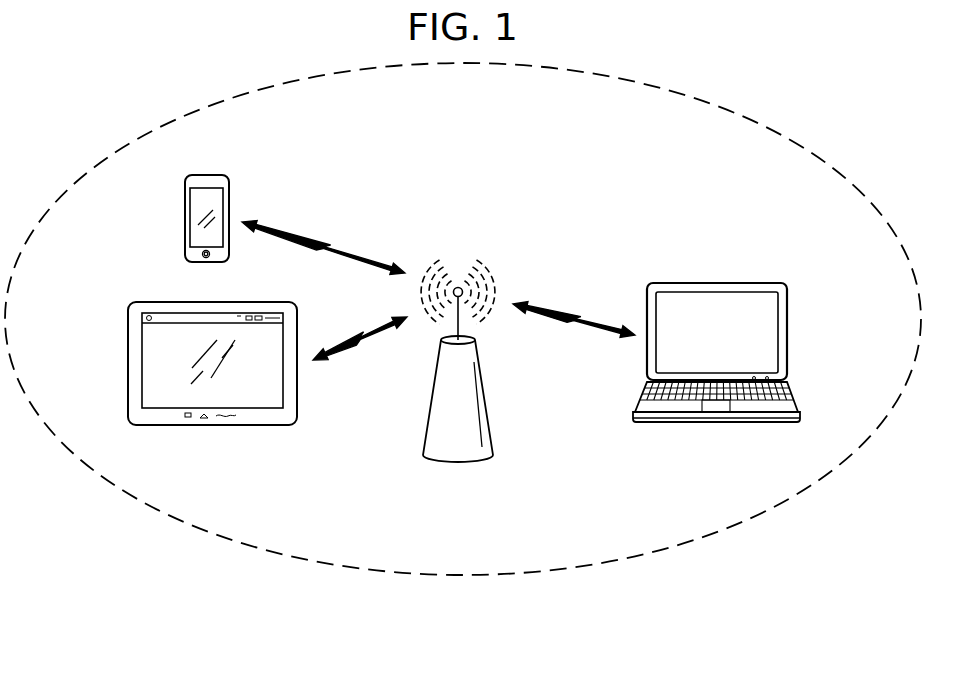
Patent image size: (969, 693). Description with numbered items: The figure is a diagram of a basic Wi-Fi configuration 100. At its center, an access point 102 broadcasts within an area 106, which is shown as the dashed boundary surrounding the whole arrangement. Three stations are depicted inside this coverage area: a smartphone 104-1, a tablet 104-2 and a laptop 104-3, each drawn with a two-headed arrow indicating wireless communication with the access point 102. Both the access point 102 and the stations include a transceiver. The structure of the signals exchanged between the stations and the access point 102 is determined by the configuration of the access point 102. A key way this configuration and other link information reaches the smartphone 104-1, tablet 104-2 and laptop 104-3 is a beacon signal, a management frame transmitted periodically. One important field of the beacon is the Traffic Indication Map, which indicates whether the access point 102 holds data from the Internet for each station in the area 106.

The basic Wi-Fi configuration 100 is at (137, 87).
The access point 102 is at (486, 399).
The smartphone 104-1 is at (184, 220).
The tablet 104-2 is at (211, 426).
The laptop 104-3 is at (714, 283).
The area 106 is at (664, 80).